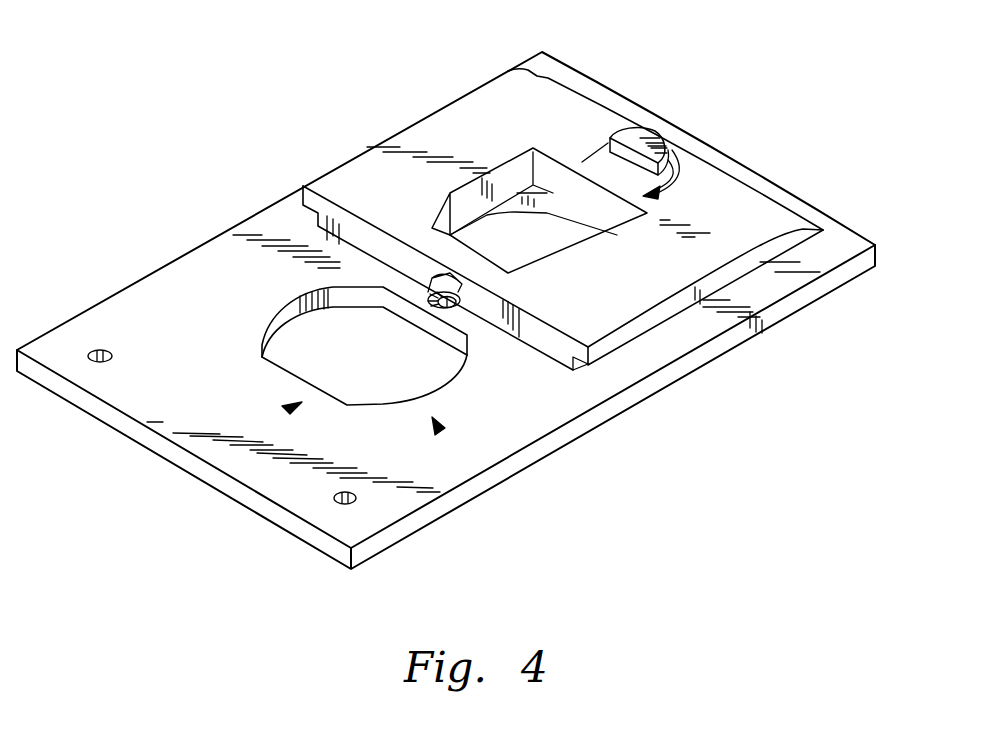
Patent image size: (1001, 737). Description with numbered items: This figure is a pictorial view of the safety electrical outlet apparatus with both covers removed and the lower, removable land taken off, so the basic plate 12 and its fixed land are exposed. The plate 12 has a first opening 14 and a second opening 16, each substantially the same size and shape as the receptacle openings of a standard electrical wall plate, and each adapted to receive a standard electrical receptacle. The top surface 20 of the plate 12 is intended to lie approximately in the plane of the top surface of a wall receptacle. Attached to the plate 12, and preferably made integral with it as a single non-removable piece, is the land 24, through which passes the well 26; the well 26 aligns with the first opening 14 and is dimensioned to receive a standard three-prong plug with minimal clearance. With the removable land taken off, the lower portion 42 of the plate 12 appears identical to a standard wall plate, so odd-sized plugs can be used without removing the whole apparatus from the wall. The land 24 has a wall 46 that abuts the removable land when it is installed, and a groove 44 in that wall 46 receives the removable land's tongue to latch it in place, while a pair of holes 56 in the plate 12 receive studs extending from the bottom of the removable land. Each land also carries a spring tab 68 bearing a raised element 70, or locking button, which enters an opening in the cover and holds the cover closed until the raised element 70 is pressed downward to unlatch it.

The plate 12 is at (530, 452).
The first opening 14 is at (575, 366).
The second opening 16 is at (262, 342).
The top surface 20 is at (300, 404).
The land 24 is at (775, 222).
The well 26 is at (557, 178).
The lower portion 42 is at (435, 425).
The groove 44 is at (432, 278).
The wall 46 is at (560, 343).
The holes 56 is at (88, 349).
The spring tab 68 is at (677, 155).
The raised element 70 is at (643, 148).